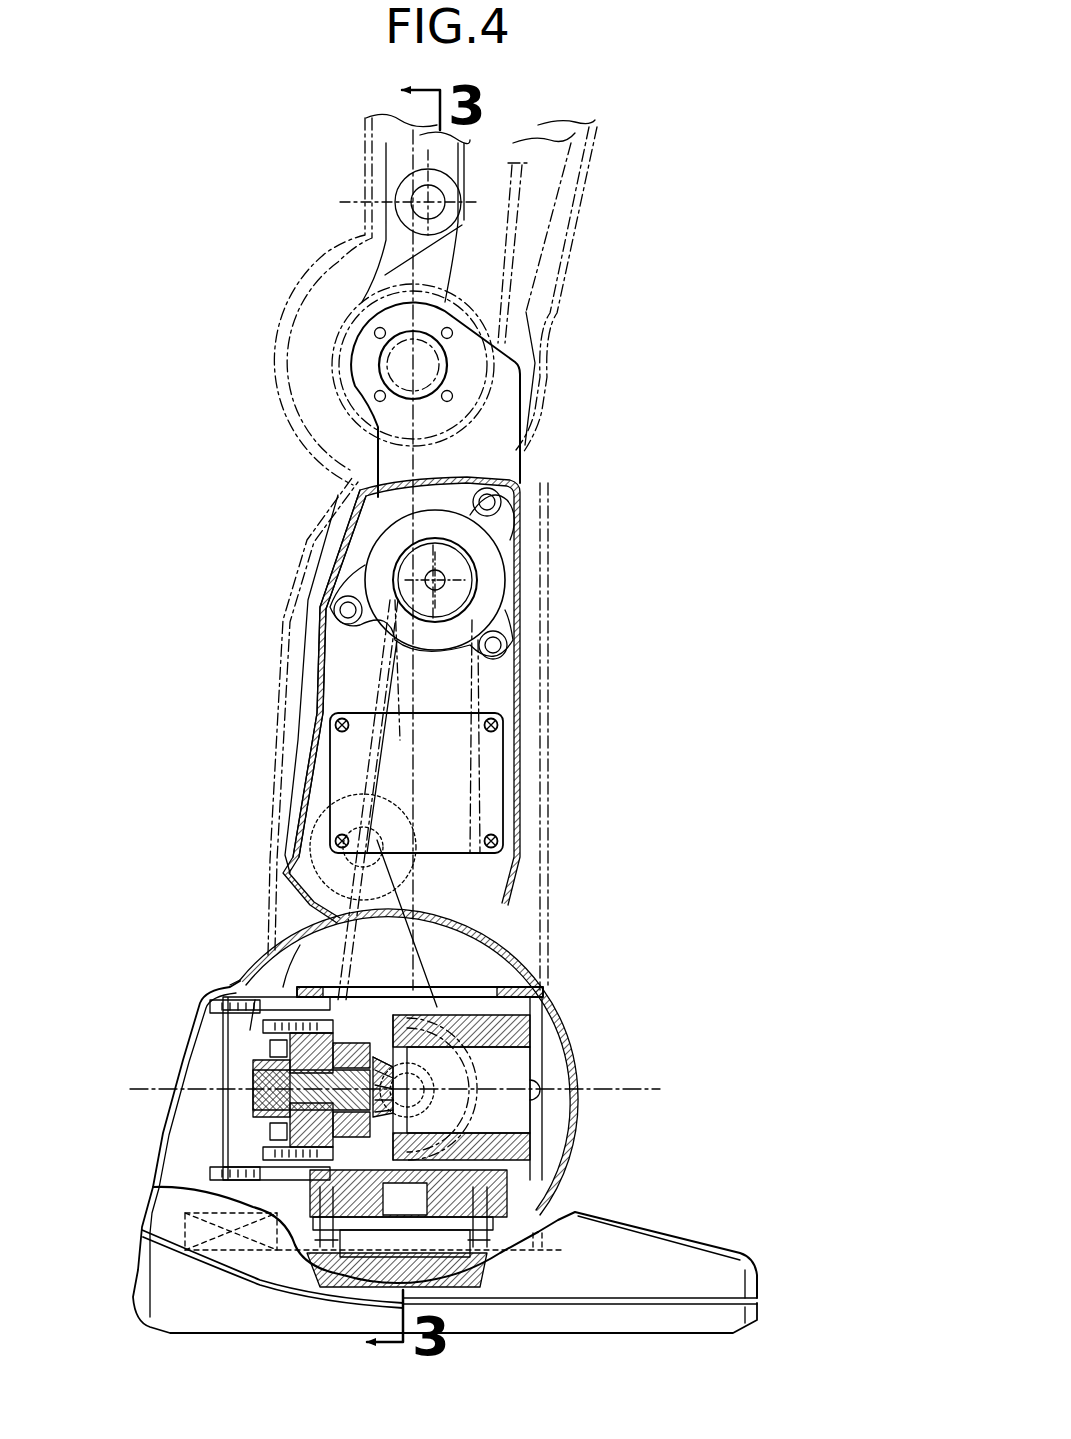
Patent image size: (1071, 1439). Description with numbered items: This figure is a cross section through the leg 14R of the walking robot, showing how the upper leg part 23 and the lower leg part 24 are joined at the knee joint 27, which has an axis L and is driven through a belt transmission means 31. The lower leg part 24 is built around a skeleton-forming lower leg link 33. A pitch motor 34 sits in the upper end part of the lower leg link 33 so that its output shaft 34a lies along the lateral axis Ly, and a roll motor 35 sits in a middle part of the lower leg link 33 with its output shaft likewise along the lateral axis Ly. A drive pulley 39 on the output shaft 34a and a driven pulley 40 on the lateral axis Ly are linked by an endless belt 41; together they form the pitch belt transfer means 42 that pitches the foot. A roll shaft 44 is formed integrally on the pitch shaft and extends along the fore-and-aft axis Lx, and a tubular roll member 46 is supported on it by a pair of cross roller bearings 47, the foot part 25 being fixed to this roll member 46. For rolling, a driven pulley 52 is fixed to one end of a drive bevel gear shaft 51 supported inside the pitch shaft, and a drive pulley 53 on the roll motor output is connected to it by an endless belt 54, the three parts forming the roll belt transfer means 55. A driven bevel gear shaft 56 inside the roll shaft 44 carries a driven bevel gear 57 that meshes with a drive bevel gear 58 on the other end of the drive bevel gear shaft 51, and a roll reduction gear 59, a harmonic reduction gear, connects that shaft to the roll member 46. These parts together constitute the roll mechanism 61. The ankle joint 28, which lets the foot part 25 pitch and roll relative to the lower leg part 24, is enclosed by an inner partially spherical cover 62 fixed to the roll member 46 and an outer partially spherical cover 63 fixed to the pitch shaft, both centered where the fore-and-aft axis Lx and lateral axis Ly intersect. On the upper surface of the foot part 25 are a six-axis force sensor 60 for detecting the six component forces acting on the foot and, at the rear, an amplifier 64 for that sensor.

The right leg 14R is at (613, 482).
The upper leg part 23 is at (563, 317).
The lower leg part 24 is at (555, 628).
The foot part 25 is at (677, 1222).
The knee joint 27 is at (443, 303).
The ankle joint 28 is at (547, 1053).
The belt transmission means 31 is at (520, 207).
The lower leg link 33 is at (520, 688).
The pitch motor 34 is at (490, 565).
The output shaft 34a is at (430, 576).
The roll motor 35 is at (265, 817).
The drive pulley 39 is at (437, 622).
The driven pulley 40 is at (446, 1243).
The endless belt 41 is at (383, 677).
The pitch belt transfer means 42 is at (365, 746).
The roll shaft 44 is at (453, 995).
The roll member 46 is at (300, 943).
The cross roller bearings 47 is at (257, 975).
The drive bevel gear shaft 51 is at (478, 1114).
The driven pulley 52 is at (368, 1000).
The drive pulley 53 is at (380, 775).
The endless belt 54 is at (283, 874).
The roll belt transfer means 55 is at (437, 868).
The driven bevel gear shaft 56 is at (327, 1183).
The driven bevel gear 57 is at (366, 1243).
The drive bevel gear 58 is at (420, 1073).
The roll reduction gear 59 is at (255, 1123).
The six-axis force sensor 60 is at (406, 1243).
The roll mechanism 61 is at (217, 1050).
The inner partially spherical cover 62 is at (577, 1125).
The outer partially spherical cover 63 is at (533, 968).
The amplifier 64 is at (173, 1228).
The axis L is at (413, 365).
The fore-and-aft axis Lx is at (637, 1089).
The lateral axis Ly is at (406, 1200).